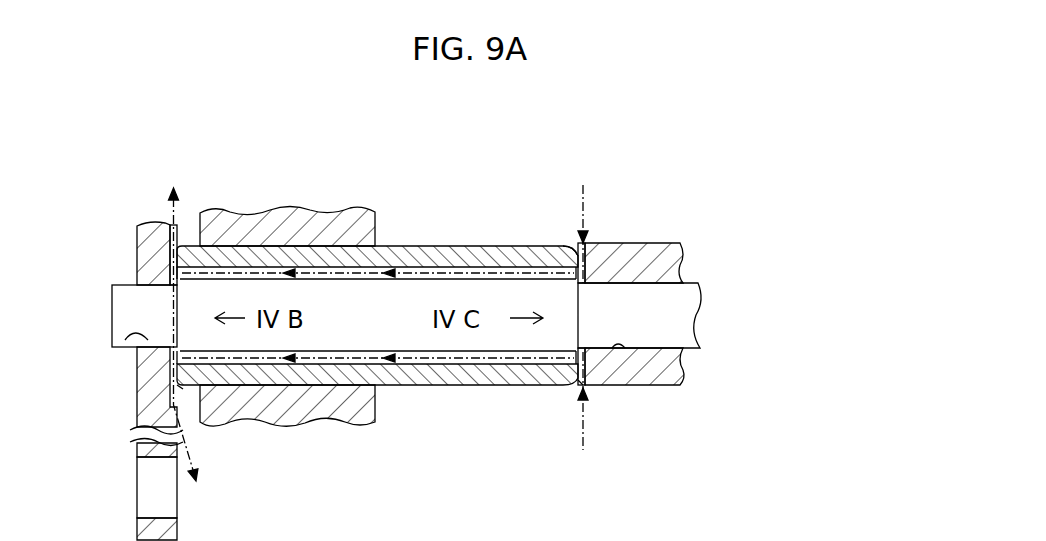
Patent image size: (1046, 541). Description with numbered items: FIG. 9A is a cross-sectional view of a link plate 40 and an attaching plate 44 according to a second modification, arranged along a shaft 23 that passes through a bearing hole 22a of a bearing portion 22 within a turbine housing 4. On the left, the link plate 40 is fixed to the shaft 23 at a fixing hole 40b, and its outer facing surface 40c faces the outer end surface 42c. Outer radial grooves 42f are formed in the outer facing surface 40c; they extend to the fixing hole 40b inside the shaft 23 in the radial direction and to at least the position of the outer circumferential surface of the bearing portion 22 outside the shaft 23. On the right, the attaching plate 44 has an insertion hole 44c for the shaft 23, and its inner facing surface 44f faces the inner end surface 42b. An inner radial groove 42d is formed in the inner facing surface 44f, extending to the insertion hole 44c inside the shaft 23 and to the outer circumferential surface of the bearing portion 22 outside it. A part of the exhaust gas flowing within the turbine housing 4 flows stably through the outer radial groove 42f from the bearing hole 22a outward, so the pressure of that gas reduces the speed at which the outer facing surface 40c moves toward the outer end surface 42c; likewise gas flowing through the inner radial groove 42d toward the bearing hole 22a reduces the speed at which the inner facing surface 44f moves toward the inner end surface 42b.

The turbine housing 4 is at (322, 425).
The bearing portion 22 is at (456, 234).
The bearing hole 22a is at (420, 362).
The shaft 23 is at (662, 333).
The link plate 40 is at (137, 237).
The fixing hole 40b is at (127, 338).
The outer facing surface 40c is at (222, 247).
The inner end surface 42b is at (577, 388).
The outer end surface 42c is at (177, 387).
The inner radial groove 42d is at (585, 243).
The outer radial groove 42f is at (170, 224).
The attaching plate 44 is at (666, 245).
The insertion hole 44c is at (607, 350).
The inner facing surface 44f is at (545, 252).